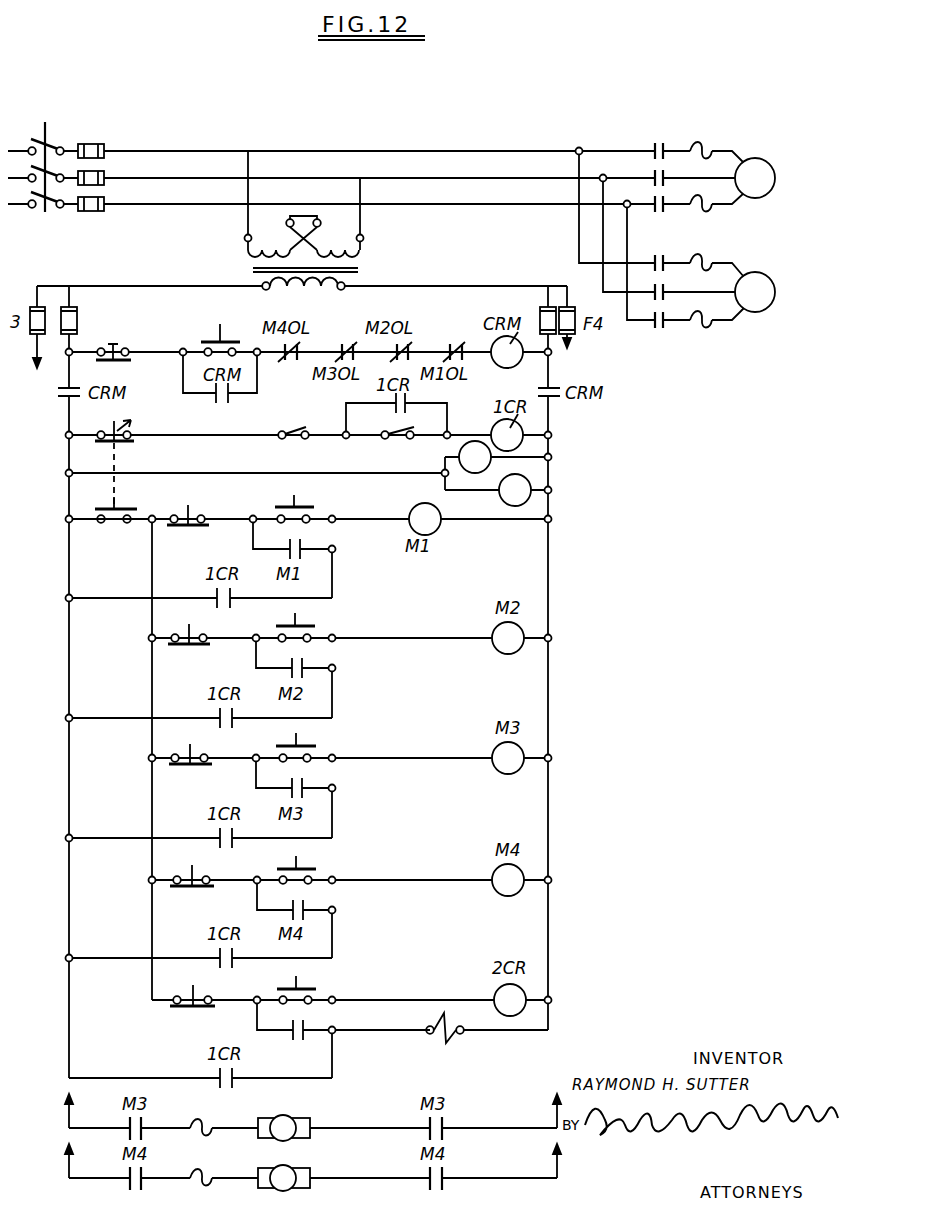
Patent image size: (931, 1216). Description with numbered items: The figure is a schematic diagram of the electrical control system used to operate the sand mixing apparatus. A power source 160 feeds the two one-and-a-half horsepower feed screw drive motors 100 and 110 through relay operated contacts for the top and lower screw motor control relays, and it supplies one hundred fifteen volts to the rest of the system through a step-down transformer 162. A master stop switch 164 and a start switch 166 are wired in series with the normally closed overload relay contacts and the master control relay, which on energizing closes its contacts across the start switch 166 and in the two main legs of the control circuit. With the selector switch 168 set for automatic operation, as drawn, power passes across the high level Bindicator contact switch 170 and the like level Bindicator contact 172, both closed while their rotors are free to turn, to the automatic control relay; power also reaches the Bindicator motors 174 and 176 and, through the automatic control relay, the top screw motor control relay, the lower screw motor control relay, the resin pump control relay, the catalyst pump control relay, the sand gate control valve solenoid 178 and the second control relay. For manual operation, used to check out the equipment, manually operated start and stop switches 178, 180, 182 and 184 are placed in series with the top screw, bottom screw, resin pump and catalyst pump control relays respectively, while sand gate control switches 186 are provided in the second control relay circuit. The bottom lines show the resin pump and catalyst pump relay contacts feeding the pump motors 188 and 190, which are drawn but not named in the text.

The feed screw drive motor 100 is at (758, 174).
The feed screw drive motor 110 is at (758, 288).
The power source 160 is at (69, 133).
The step-down transformer 162 is at (362, 272).
The master stop switch 164 is at (120, 344).
The start switch 166 is at (225, 338).
The selector switch 168 is at (118, 446).
The high level Bindicator contact switch 170 is at (296, 430).
The low level Bindicator contact 172 is at (397, 440).
The Bindicator motor 174 is at (470, 461).
The Bindicator motor 176 is at (520, 497).
The sand gate control valve solenoid 178 is at (290, 503).
The start and stop switches 180 is at (192, 646).
The start and stop switches 182 is at (192, 766).
The start and stop switches 184 is at (194, 888).
The sand gate control switches 186 is at (195, 1008).
The motor 188 is at (287, 1123).
The motor 190 is at (287, 1173).